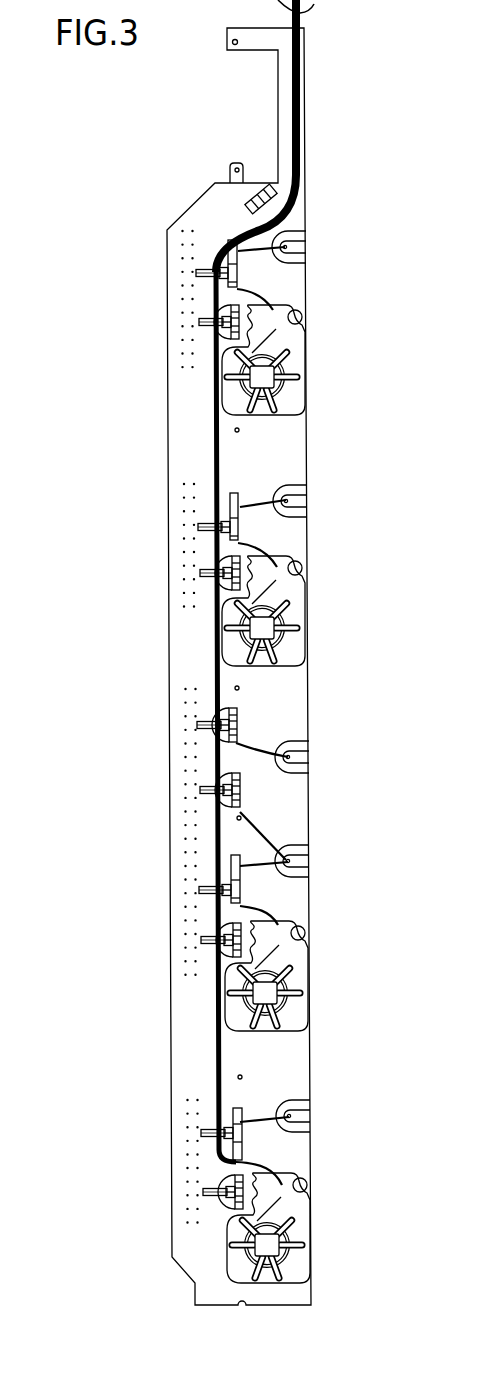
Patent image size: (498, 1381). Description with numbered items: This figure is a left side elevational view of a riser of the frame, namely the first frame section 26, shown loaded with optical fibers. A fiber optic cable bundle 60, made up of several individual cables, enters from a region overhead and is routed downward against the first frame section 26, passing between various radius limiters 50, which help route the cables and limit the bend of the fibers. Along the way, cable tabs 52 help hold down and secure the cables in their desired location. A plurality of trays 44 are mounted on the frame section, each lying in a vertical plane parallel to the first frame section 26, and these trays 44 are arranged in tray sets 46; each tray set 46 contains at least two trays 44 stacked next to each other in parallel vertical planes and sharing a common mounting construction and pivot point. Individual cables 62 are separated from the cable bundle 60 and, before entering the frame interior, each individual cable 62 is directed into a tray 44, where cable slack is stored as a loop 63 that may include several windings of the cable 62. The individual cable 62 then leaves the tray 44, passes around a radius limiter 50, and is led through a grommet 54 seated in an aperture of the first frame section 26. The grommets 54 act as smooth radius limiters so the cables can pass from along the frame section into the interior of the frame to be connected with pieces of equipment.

The first frame section 26 is at (165, 163).
The tray 44 is at (302, 390).
The tray set 46 is at (317, 786).
The radius limiter 50 is at (252, 212).
The cable tab 52 is at (207, 323).
The grommet 54 is at (300, 488).
The fiber optic cable bundle 60 is at (296, 103).
The individual cable 62 is at (284, 246).
The loop 63 is at (287, 393).